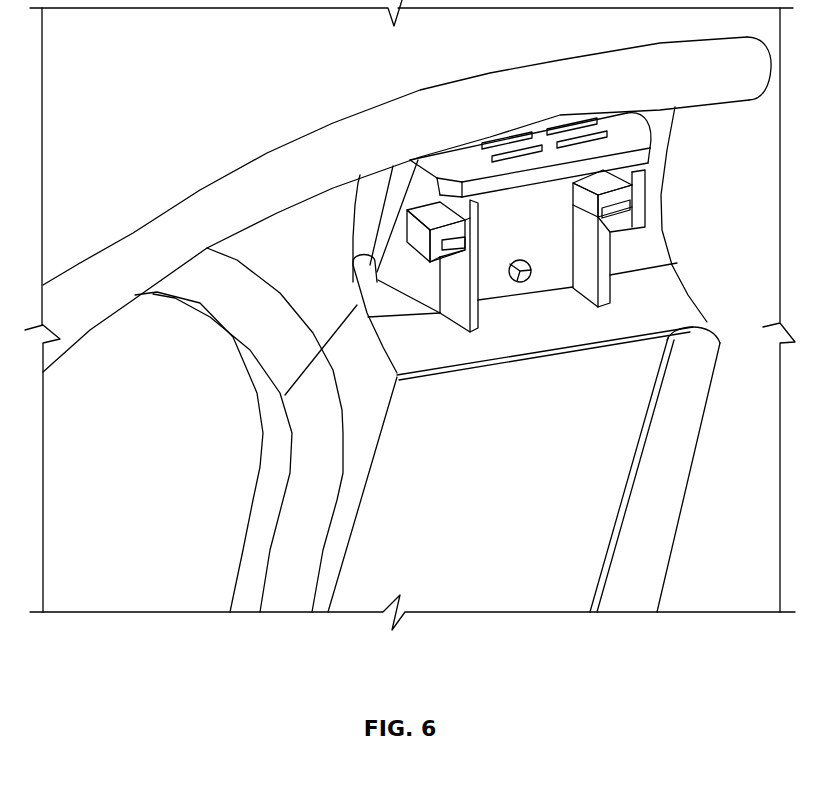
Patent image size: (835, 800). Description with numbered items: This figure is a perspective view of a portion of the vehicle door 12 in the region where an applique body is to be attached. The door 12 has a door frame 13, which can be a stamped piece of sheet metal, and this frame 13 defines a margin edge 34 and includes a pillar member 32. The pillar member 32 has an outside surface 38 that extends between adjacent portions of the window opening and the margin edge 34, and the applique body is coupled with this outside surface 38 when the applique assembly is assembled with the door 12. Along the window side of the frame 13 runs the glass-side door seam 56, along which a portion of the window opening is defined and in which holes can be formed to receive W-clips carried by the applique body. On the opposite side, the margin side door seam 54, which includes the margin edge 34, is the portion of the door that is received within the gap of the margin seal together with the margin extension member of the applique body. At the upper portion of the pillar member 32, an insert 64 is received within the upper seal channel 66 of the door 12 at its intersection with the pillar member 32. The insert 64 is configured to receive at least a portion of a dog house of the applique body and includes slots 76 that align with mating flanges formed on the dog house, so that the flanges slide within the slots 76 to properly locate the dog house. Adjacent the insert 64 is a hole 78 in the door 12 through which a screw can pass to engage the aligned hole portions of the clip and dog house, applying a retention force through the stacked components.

The vehicle door 12 is at (182, 67).
The door frame 13 is at (120, 240).
The pillar member 32 is at (592, 507).
The margin edge 34 is at (702, 418).
The outside surface 38 is at (529, 552).
The margin side door seam 54 is at (702, 349).
The glass-side door seam 56 is at (250, 584).
The insert 64 is at (650, 186).
The upper seal channel 66 is at (366, 184).
The slots 76 is at (573, 208).
The hole 78 is at (532, 271).